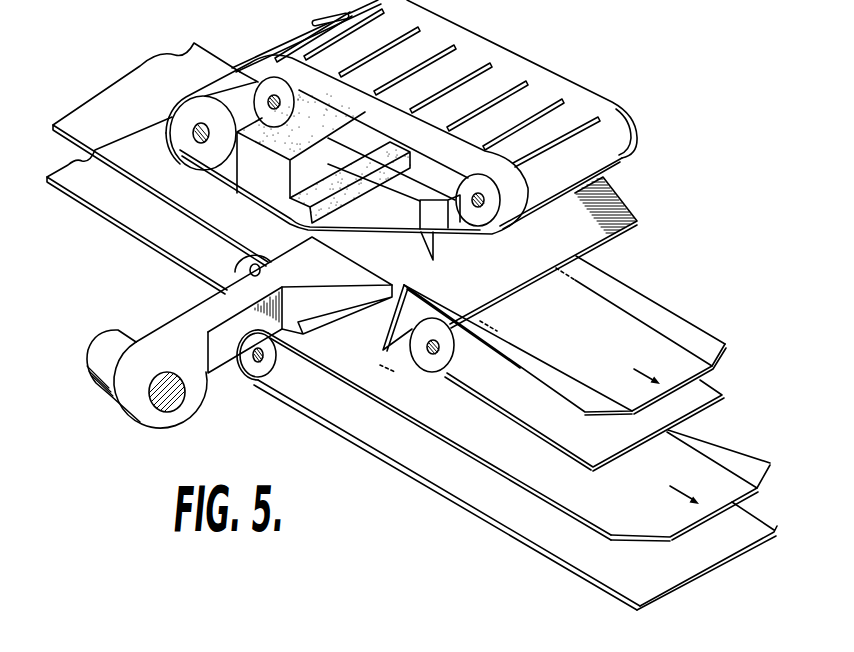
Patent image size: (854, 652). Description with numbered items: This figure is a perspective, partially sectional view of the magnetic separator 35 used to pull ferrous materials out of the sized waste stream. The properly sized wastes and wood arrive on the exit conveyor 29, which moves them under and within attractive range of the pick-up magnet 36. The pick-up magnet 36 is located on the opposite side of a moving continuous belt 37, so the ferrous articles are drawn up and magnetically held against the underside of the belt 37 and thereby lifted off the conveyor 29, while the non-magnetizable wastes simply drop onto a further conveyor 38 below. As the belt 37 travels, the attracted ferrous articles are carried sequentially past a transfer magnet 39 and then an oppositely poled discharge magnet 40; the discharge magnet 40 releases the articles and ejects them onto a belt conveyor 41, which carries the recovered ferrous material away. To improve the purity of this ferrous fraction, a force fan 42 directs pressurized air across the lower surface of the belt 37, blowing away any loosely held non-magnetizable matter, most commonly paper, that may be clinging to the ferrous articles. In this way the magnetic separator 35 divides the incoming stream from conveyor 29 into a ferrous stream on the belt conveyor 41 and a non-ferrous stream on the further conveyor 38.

The exit conveyor 29 is at (158, 93).
The magnetic separator 35 is at (550, 58).
The pick-up magnet 36 is at (275, 194).
The moving continuous belt 37 is at (417, 233).
The further conveyor 38 is at (355, 354).
The transfer magnet 39 is at (395, 173).
The discharge magnet 40 is at (444, 217).
The belt conveyor 41 is at (636, 303).
The force fan 42 is at (198, 366).